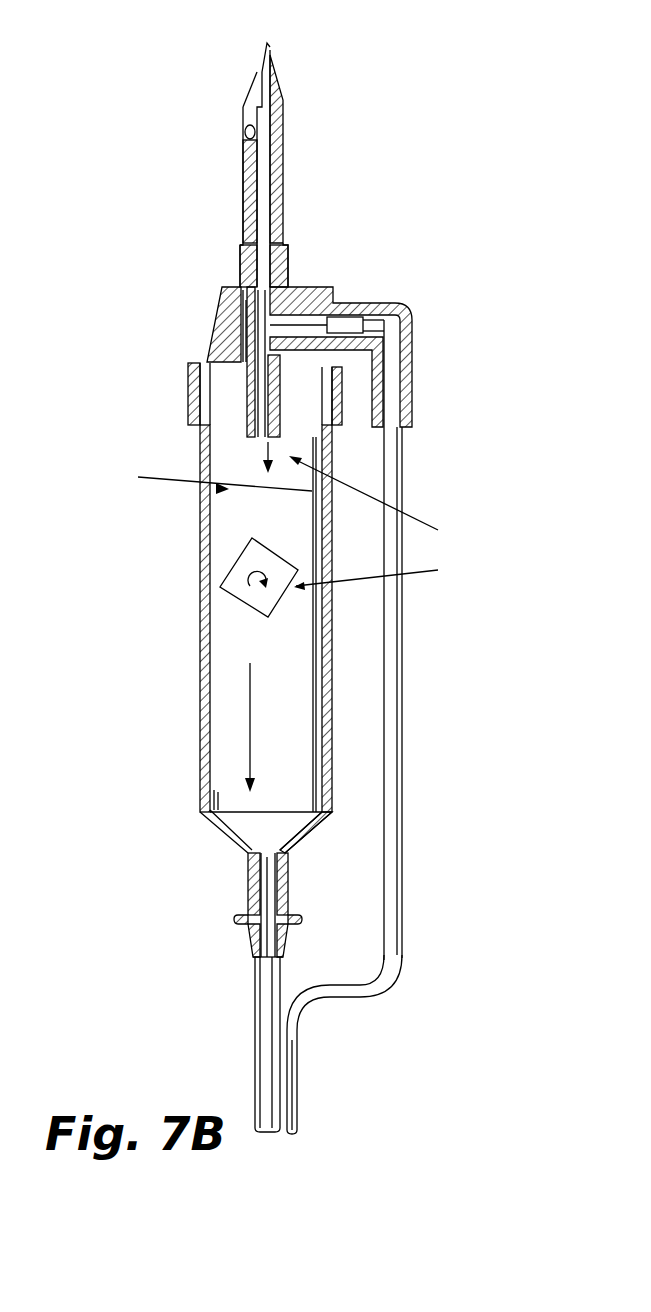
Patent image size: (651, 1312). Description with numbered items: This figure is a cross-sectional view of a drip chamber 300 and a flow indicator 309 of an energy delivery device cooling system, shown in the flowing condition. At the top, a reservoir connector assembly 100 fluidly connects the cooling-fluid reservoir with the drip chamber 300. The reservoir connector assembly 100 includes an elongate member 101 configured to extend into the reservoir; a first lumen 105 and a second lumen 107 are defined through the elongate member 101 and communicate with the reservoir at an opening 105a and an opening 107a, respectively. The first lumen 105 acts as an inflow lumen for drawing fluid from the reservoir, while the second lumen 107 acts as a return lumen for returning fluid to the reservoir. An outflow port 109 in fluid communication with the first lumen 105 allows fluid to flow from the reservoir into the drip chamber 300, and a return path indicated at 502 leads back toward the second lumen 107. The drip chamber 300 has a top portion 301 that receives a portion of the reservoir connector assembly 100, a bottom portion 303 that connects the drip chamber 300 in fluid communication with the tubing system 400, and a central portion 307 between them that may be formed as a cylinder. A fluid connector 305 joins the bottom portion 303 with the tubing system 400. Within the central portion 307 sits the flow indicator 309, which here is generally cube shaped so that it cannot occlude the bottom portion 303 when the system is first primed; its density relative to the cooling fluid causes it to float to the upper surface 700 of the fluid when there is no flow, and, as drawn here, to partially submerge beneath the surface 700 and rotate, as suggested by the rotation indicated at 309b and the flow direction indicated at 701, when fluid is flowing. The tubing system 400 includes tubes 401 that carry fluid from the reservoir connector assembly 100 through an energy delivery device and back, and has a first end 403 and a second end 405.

The reservoir connector assembly 100 is at (187, 330).
The elongate member 101 is at (290, 172).
The first lumen 105 is at (250, 136).
The opening 105a is at (240, 98).
The second lumen 107 is at (266, 85).
The opening 107a is at (270, 44).
The outflow port 109 is at (257, 442).
The drip chamber 300 is at (196, 565).
The top portion 301 is at (188, 385).
The bottom portion 303 is at (240, 883).
The fluid connector 305 is at (303, 920).
The central portion 307 is at (200, 623).
The flow indicator 309 is at (308, 630).
The agitator / mixing element 309b is at (357, 577).
The tubing system 400 is at (303, 1087).
The tube 401 is at (396, 454).
The first end 403 is at (253, 965).
The second end 405 is at (410, 368).
The side arm 502 is at (407, 304).
The upper surface 700 is at (195, 481).
The fluid flow direction 701 is at (386, 497).